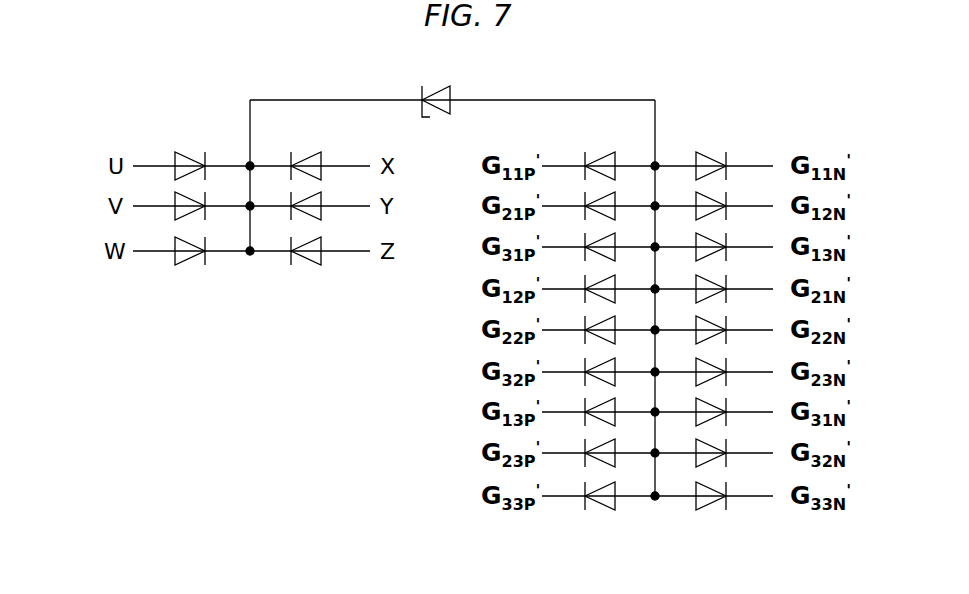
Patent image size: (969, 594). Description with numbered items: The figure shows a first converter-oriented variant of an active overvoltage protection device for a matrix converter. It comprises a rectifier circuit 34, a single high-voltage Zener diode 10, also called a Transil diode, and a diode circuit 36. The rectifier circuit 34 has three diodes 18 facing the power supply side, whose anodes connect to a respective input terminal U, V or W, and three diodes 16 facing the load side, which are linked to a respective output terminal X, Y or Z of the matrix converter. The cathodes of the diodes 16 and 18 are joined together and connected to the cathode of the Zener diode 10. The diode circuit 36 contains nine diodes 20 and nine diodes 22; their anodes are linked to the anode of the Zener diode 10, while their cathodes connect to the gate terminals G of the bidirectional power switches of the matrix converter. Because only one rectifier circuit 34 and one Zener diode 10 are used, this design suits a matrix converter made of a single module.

The high-voltage Zener diode 10 is at (426, 92).
The diodes 16 is at (306, 225).
The diodes 18 is at (190, 225).
The diodes 20 is at (600, 314).
The diodes 22 is at (711, 314).
The rectifier circuit 34 is at (265, 253).
The diode circuit 36 is at (678, 500).